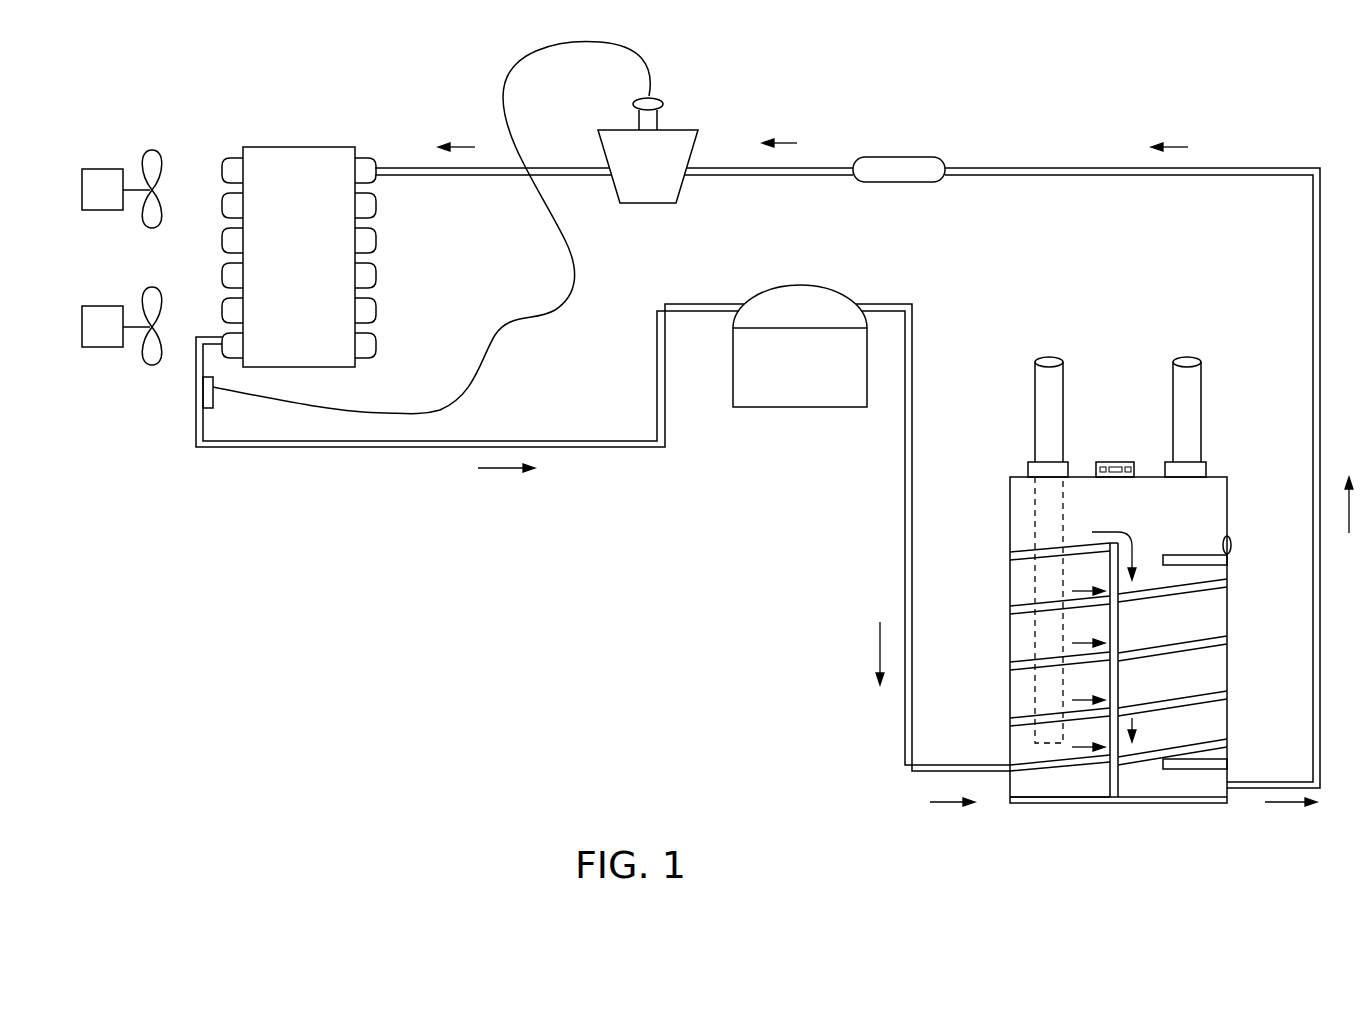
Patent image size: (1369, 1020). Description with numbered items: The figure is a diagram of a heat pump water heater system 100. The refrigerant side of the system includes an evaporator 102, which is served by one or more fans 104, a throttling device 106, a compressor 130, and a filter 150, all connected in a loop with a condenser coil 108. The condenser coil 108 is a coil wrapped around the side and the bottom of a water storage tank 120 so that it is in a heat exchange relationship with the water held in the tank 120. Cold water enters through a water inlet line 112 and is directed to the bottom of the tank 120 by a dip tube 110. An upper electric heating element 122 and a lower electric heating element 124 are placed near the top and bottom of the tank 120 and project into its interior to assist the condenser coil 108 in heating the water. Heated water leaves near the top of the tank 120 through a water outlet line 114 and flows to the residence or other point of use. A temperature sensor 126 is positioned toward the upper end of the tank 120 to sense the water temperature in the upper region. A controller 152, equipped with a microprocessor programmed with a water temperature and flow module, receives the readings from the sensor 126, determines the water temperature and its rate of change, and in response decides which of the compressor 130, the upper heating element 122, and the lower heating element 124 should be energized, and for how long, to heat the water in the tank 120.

The heat pump water heater system 100 is at (437, 609).
The evaporator 102 is at (317, 368).
The fans 104 is at (82, 190).
The throttling device 106 is at (663, 95).
The condenser coil 108 is at (1022, 563).
The dip tube 110 is at (1034, 508).
The water inlet line 112 is at (1049, 362).
The water outlet line 114 is at (1187, 362).
The water storage tank 120 is at (1067, 780).
The upper electric heating element 122 is at (1190, 555).
The lower electric heating element 124 is at (1196, 771).
The temperature sensor 126 is at (1231, 550).
The compressor 130 is at (785, 407).
The filter 150 is at (900, 150).
The controller 152 is at (1115, 462).